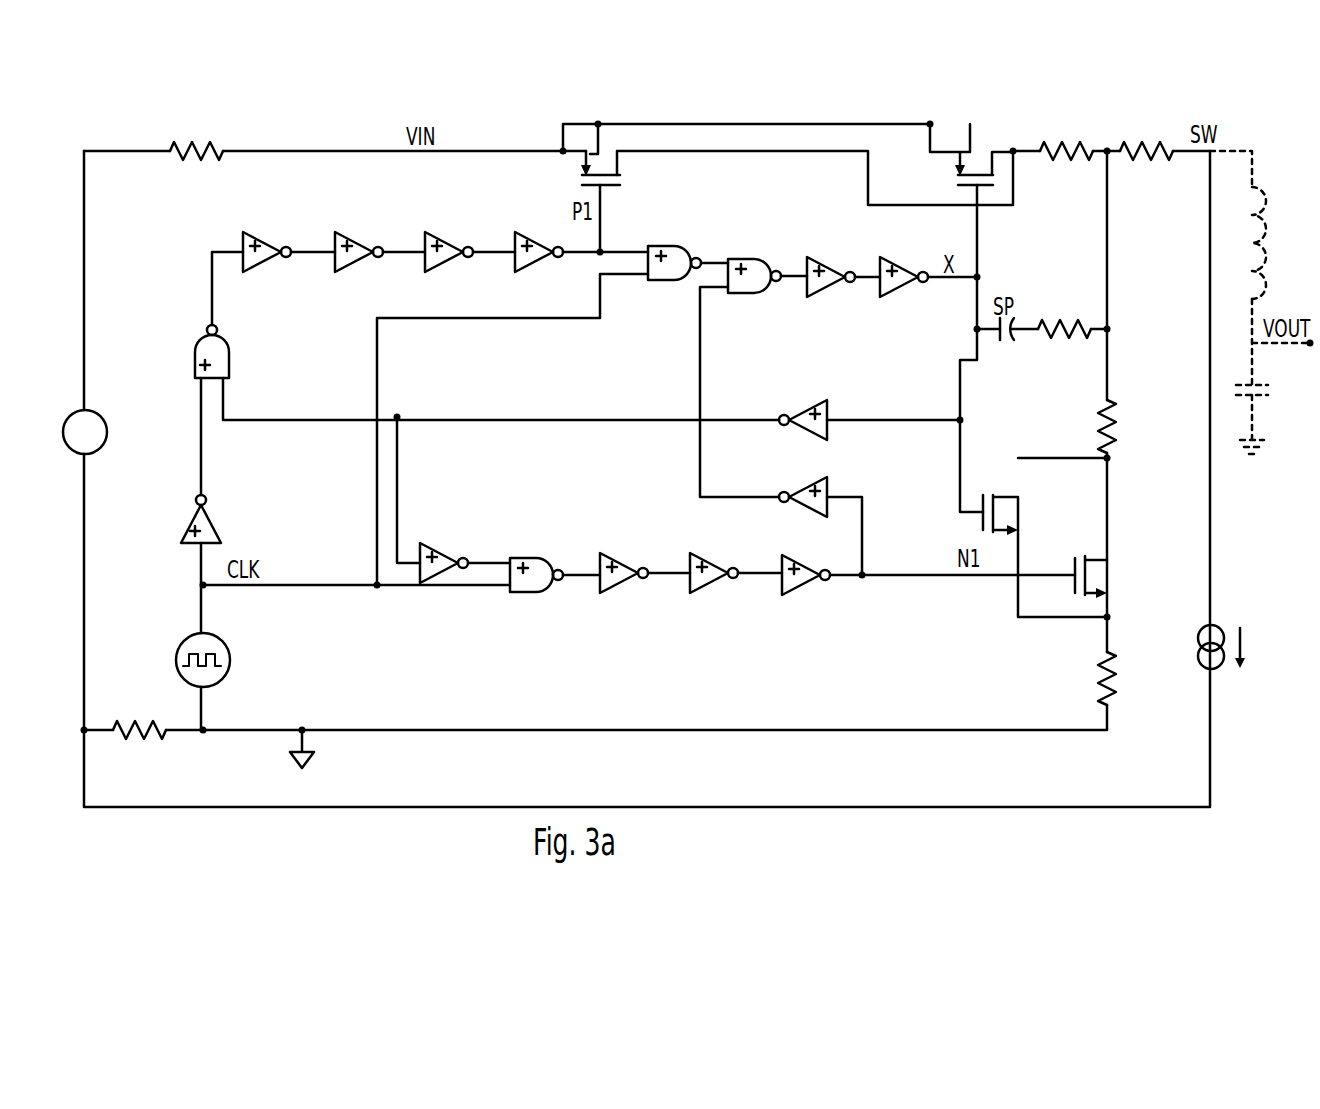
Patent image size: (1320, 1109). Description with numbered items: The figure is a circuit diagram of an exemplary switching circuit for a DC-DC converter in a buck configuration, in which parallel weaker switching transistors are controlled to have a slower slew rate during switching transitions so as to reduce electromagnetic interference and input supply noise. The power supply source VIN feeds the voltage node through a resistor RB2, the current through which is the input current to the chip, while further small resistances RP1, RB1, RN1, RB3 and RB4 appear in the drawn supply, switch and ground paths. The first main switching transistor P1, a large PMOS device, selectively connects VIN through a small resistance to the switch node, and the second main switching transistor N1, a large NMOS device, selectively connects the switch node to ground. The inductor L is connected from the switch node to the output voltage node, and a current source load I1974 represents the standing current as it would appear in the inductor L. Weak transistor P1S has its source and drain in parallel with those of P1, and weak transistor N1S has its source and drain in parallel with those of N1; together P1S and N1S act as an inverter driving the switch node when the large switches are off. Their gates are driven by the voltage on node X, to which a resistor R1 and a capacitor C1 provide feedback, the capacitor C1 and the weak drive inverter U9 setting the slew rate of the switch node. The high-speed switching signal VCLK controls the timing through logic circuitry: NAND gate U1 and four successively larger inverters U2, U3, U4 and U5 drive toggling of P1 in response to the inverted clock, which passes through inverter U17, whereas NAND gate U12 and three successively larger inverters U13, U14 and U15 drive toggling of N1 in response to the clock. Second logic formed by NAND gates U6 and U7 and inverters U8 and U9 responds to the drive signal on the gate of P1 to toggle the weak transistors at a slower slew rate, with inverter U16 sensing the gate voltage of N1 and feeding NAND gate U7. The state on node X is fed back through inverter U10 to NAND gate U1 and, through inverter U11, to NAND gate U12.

The resistor RB2 is at (196, 122).
The PMOS drain resistance RP1 is at (1066, 121).
The switch node bond wire resistance RB1 is at (1146, 121).
The resistor R1 is at (1064, 299).
The capacitor C1 is at (1004, 300).
The NMOS drain resistance RN1 is at (1126, 424).
The ground bond wire resistance RB3 is at (1129, 678).
The ground bond wire resistance RB4 is at (139, 699).
The inductor L is at (1272, 243).
The main PMOS switching transistor P1 is at (604, 125).
The weak PMOS switching transistor P1S is at (969, 127).
The weak NMOS switching transistor N1S is at (1045, 537).
The main NMOS switching transistor N1 is at (1118, 569).
The NAND gate U1 is at (227, 352).
The inverter U2 is at (263, 267).
The inverter U3 is at (356, 267).
The inverter U4 is at (445, 267).
The inverter U5 is at (536, 267).
The NAND gate U6 is at (674, 281).
The NAND gate U7 is at (754, 291).
The inverter U8 is at (830, 290).
The weak drive inverter U9 is at (902, 290).
The inverter U10 is at (803, 432).
The inverter U11 is at (444, 551).
The NAND gate U12 is at (536, 590).
The inverter U13 is at (621, 588).
The inverter U14 is at (709, 586).
The inverter U15 is at (802, 589).
The inverter U16 is at (805, 511).
The inverter U17 is at (189, 519).
The input voltage VIN is at (95, 419).
The high-speed switching signal VCLK is at (226, 657).
The load current source I1974 is at (1259, 648).